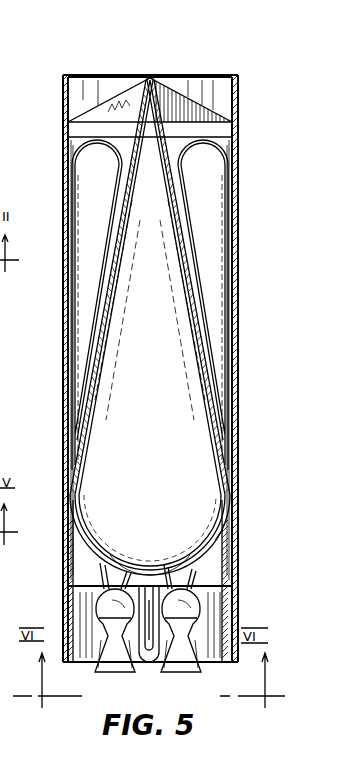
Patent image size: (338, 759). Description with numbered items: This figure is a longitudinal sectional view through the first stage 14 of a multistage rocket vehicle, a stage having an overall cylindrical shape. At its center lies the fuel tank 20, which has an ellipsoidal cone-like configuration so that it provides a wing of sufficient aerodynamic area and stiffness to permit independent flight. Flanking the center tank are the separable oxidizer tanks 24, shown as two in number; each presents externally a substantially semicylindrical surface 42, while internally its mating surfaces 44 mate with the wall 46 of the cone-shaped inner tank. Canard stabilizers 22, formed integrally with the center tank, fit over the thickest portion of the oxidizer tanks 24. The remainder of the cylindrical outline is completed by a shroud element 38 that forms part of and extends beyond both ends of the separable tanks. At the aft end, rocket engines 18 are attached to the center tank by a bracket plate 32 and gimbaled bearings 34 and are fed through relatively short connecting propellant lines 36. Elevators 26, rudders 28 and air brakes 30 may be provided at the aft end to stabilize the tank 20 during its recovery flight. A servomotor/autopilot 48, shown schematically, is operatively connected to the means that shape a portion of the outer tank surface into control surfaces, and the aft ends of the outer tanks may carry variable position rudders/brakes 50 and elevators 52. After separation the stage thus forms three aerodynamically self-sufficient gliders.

The first stage 14 is at (50, 368).
The rocket engines 18 is at (118, 672).
The fuel tank 20 is at (160, 415).
The canard stabilizers 22 is at (215, 126).
The oxidizer tanks 24 is at (105, 200).
The elevators 26 is at (119, 575).
The rudders 28 is at (194, 566).
The air brakes 30 is at (67, 571).
The bracket plate 32 is at (222, 592).
The gimbaled bearings 34 is at (197, 557).
The connecting propellant lines 36 is at (131, 534).
The shroud element 38 is at (236, 320).
The semicylindrical surface 42 is at (206, 664).
The mating surfaces 44 is at (190, 263).
The wall 46 is at (184, 283).
The servomotor/autopilot 48 is at (151, 665).
The rudders/brakes 50 is at (231, 85).
The elevators 52 is at (171, 82).